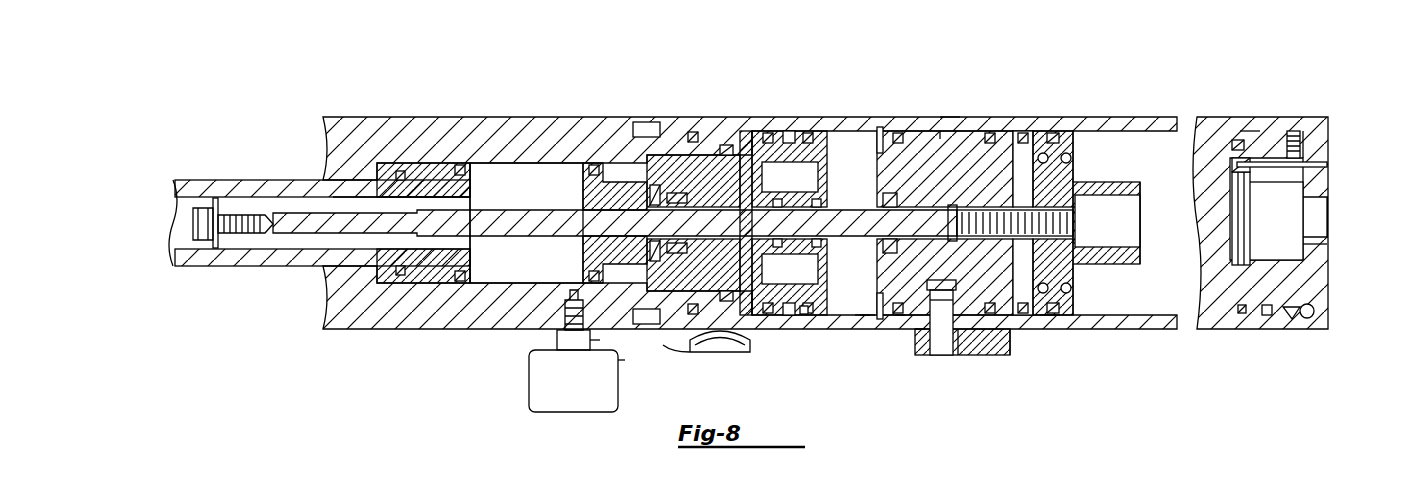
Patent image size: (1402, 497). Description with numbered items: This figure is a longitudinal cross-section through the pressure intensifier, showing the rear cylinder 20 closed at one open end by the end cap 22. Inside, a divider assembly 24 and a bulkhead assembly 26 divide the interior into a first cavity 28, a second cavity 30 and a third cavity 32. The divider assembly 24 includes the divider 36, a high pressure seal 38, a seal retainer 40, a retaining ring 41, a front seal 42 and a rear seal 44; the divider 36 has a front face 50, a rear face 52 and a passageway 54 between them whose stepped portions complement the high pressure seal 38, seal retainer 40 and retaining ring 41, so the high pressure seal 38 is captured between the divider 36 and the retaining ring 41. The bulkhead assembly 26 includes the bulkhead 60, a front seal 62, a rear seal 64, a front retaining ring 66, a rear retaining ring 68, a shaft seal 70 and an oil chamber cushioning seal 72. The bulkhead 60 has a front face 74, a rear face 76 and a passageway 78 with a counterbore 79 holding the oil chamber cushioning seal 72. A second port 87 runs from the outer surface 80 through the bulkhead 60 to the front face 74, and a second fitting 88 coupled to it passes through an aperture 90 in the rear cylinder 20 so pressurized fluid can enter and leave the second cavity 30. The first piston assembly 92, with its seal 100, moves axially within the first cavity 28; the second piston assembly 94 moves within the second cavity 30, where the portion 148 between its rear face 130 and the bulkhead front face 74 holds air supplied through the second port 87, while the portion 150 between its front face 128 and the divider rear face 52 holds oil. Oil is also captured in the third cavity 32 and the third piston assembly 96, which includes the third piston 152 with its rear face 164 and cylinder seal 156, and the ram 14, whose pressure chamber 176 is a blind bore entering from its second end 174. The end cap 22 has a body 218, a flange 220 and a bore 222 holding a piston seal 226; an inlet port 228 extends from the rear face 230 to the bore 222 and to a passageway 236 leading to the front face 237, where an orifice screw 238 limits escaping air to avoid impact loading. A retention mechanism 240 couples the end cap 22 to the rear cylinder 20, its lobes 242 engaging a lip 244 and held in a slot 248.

The ram 14 is at (275, 267).
The rear cylinder 20 is at (1128, 117).
The end cap 22 is at (1312, 111).
The divider assembly 24 is at (702, 150).
The bulkhead assembly 26 is at (948, 119).
The first cavity 28 is at (1130, 165).
The second cavity 30 is at (860, 170).
The third cavity 32 is at (538, 198).
The divider 36 is at (622, 165).
The high pressure seal 38 is at (655, 330).
The seal retainer 40 is at (643, 329).
The retaining ring 41 is at (627, 329).
The front seal 42 is at (592, 160).
The rear seal 44 is at (732, 145).
The front face 50 is at (560, 152).
The rear face 52 is at (775, 135).
The passageway 54 is at (746, 312).
The bulkhead 60 is at (992, 130).
The front seal 62 is at (896, 130).
The rear seal 64 is at (1042, 130).
The front retaining ring 66 is at (880, 127).
The rear retaining ring 68 is at (1068, 132).
The shaft seal 70 is at (884, 200).
The oil chamber cushioning seal 72 is at (1015, 330).
The front face 74 is at (858, 320).
The rear face 76 is at (1045, 318).
The passageway 78 is at (900, 335).
The counterbore 79 is at (970, 332).
The outer surface 80 is at (940, 130).
The second port 87 is at (920, 335).
The second fitting 88 is at (957, 352).
The aperture 90 is at (975, 355).
The first piston assembly 92 is at (1090, 273).
The second piston assembly 94 is at (865, 335).
The third piston assembly 96 is at (487, 273).
The seal 100 is at (1097, 333).
The front face 128 is at (800, 318).
The rear face 130 is at (812, 130).
The portion 148 is at (870, 335).
The portion 150 is at (740, 345).
The third piston 152 is at (404, 160).
The cylinder seal 156 is at (460, 160).
The rear face 164 is at (470, 195).
The second end 174 is at (448, 285).
The pressure chamber 176 is at (362, 211).
The body 218 is at (1248, 318).
The flange 220 is at (1322, 120).
The bore 222 is at (1282, 240).
The piston seal 226 is at (1235, 205).
The inlet port 228 is at (1328, 228).
The rear face 230 is at (1320, 318).
The passageway 236 is at (1325, 163).
The front face 237 is at (1228, 135).
The orifice screw 238 is at (1240, 170).
The retention mechanism 240 is at (1265, 108).
The lobes 242 is at (1267, 315).
The lip 244 is at (1298, 318).
The slot 248 is at (1246, 128).